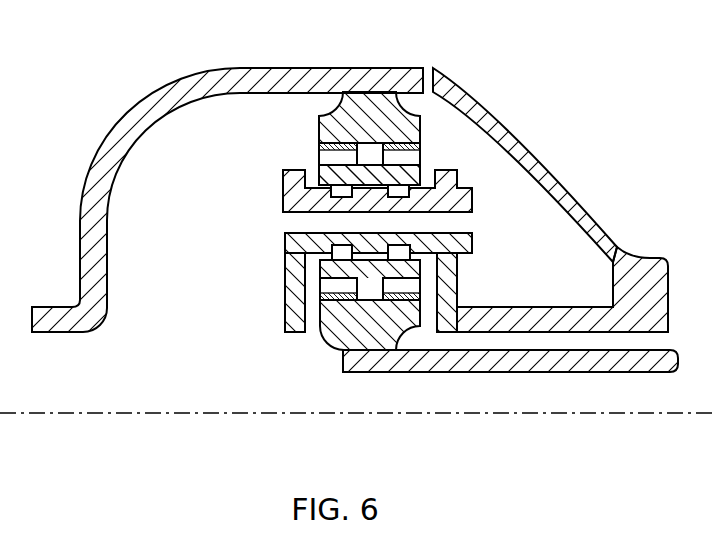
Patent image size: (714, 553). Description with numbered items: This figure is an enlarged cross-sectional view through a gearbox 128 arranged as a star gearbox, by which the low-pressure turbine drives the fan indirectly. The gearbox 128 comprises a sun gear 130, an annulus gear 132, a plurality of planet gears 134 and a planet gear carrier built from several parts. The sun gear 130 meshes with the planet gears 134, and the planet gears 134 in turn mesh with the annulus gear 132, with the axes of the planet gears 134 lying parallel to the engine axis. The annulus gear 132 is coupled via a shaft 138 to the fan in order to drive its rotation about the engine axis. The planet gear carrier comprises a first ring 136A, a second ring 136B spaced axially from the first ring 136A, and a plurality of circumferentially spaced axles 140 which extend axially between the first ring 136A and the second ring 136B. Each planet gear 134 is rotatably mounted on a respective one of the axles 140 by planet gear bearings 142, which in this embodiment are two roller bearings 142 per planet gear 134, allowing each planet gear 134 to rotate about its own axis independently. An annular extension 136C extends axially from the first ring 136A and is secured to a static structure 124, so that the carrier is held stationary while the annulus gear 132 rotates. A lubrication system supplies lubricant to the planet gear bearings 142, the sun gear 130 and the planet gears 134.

The static structure 124 is at (478, 88).
The gearbox 128 is at (240, 348).
The sun gear 130 is at (340, 297).
The annulus gear 132 is at (360, 120).
The planet gear 134 is at (398, 178).
The first ring 136A is at (447, 290).
The second ring 136B is at (290, 275).
The annular extension 136C is at (550, 302).
The shaft 138 is at (413, 78).
The axle 140 is at (300, 200).
The planet gear bearing 142 is at (393, 250).